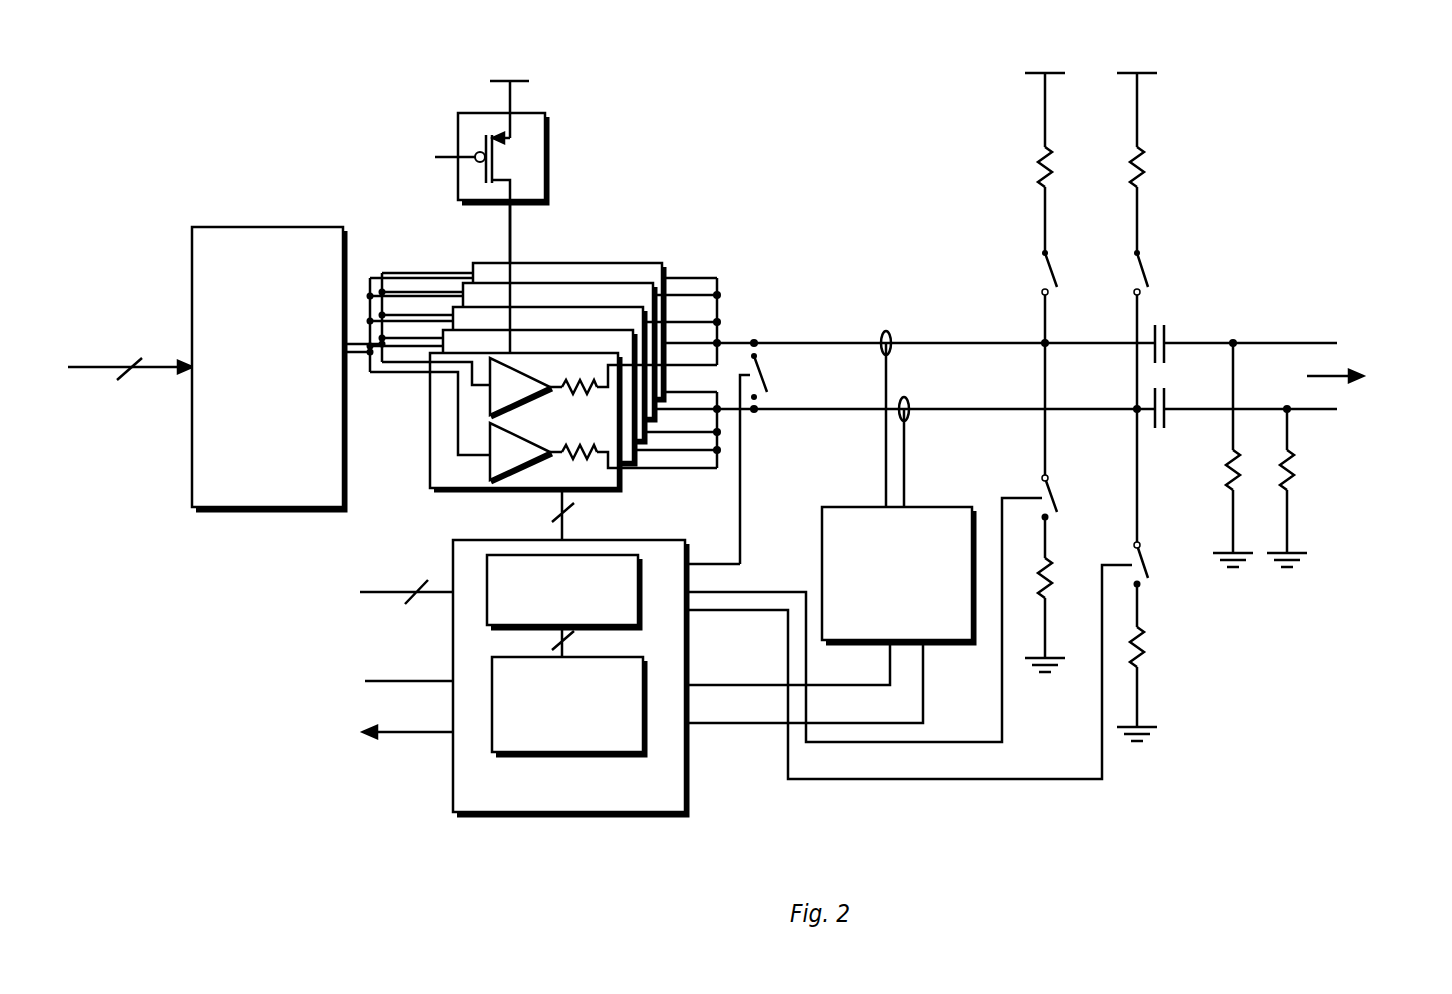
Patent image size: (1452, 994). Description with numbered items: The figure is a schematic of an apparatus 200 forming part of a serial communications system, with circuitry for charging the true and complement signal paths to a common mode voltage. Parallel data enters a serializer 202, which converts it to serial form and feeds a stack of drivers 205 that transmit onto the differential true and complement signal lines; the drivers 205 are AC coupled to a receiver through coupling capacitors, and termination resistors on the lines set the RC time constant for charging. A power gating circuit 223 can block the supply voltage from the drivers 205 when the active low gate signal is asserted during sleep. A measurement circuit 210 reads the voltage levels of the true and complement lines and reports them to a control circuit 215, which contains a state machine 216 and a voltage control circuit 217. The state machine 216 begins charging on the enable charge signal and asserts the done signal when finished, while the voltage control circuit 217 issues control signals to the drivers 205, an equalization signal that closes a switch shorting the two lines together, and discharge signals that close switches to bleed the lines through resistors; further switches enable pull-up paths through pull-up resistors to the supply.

The apparatus 200 is at (915, 52).
The serializer 202 is at (285, 393).
The driver 205 is at (742, 244).
The measurement circuit 210 is at (914, 609).
The control circuit 215 is at (653, 801).
The state machine 216 is at (581, 741).
The voltage control circuit 217 is at (578, 613).
The power gating circuit 223 is at (725, 97).